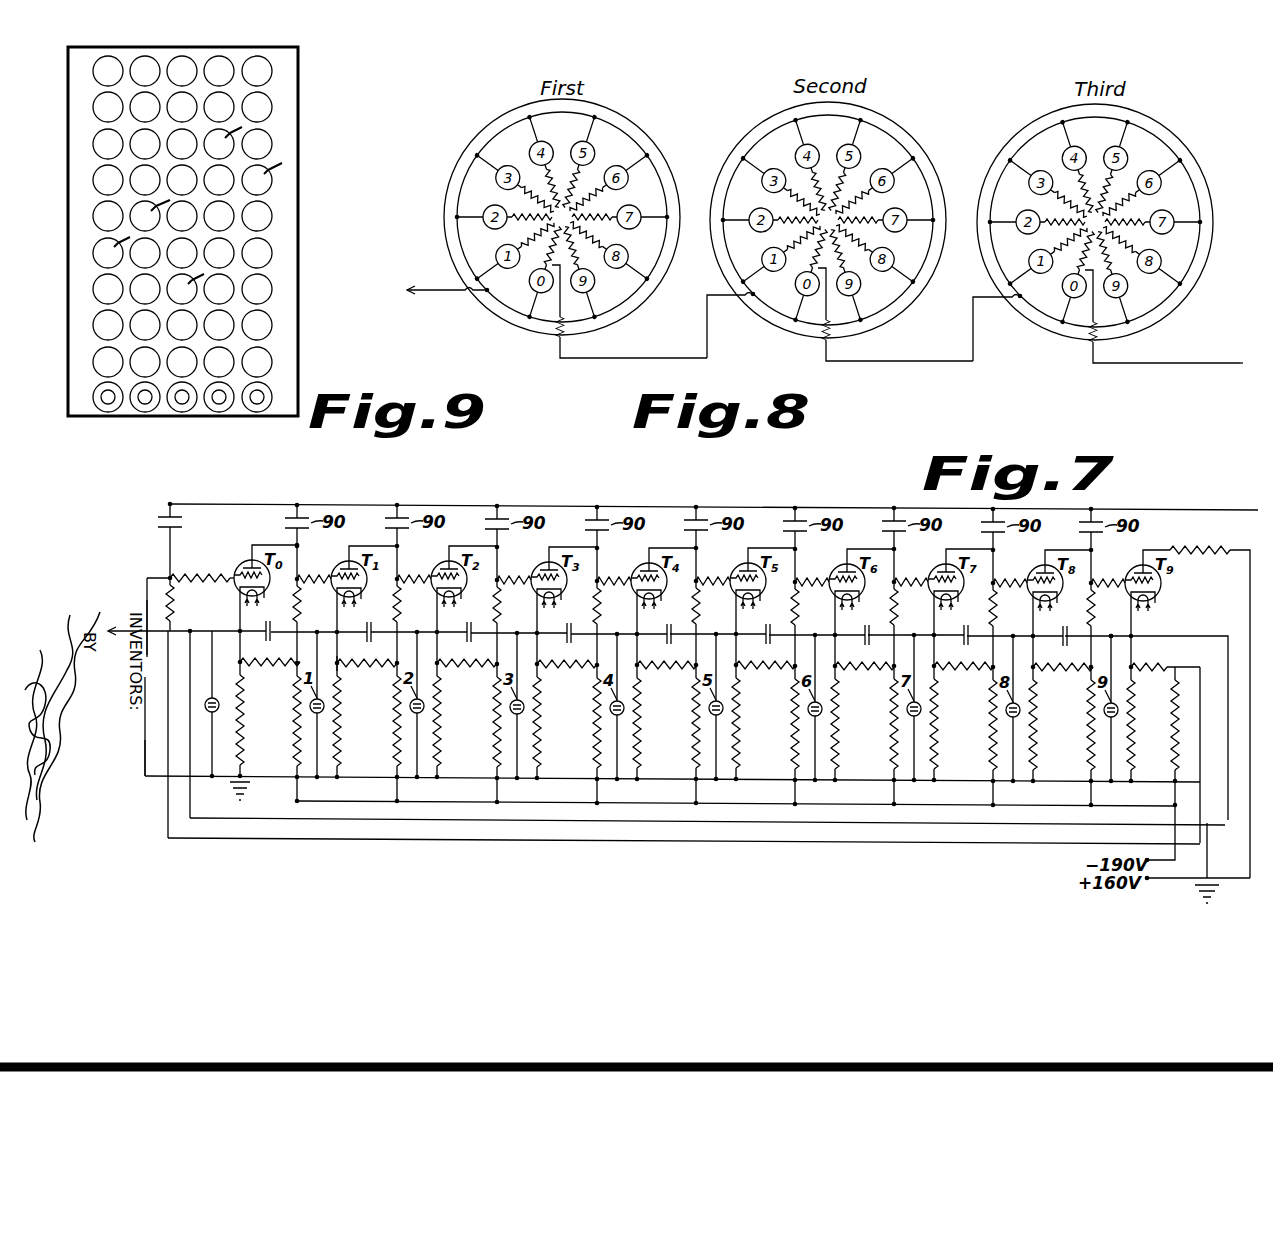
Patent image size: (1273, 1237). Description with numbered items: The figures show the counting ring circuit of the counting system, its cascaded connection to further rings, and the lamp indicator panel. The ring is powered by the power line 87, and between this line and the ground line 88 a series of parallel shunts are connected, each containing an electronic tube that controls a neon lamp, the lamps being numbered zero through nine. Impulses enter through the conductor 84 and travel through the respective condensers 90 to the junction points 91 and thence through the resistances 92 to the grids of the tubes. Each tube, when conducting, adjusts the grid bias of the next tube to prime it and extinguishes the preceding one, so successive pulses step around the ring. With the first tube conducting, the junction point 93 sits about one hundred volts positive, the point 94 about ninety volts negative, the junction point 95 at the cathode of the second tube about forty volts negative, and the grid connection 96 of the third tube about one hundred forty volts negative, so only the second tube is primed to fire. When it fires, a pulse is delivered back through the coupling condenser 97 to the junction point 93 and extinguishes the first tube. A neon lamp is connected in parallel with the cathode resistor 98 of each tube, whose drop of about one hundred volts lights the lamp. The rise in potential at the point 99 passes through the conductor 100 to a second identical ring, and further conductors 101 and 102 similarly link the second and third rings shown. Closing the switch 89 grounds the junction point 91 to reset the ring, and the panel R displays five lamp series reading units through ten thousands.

In FIG. 9, the indicator panel R is at (299, 120).
In FIG. 8, the conductor 84 is at (428, 291).
In FIG. 7, the conductor 84 is at (690, 505).
In FIG. 7, the power line 87 is at (1196, 712).
In FIG. 7, the ground line 88 is at (145, 778).
In FIG. 7, the switch 89 is at (147, 657).
In FIG. 7, the condenser 90 is at (143, 543).
In FIG. 7, the junction point 91 is at (151, 588).
In FIG. 7, the resistance 92 is at (201, 564).
In FIG. 7, the junction point 93 is at (228, 653).
In FIG. 7, the point 94 is at (270, 676).
In FIG. 7, the junction point 95 is at (327, 656).
In FIG. 7, the grid connection 96 is at (367, 678).
In FIG. 7, the capacitor 97 is at (272, 618).
In FIG. 7, the cathode resistor 98 is at (257, 726).
In FIG. 7, the point 99 is at (225, 613).
In FIG. 8, the conductor 100 is at (622, 358).
In FIG. 7, the conductor 100 is at (179, 615).
In FIG. 8, the output line 101 is at (937, 361).
In FIG. 8, the output line 102 is at (1190, 364).